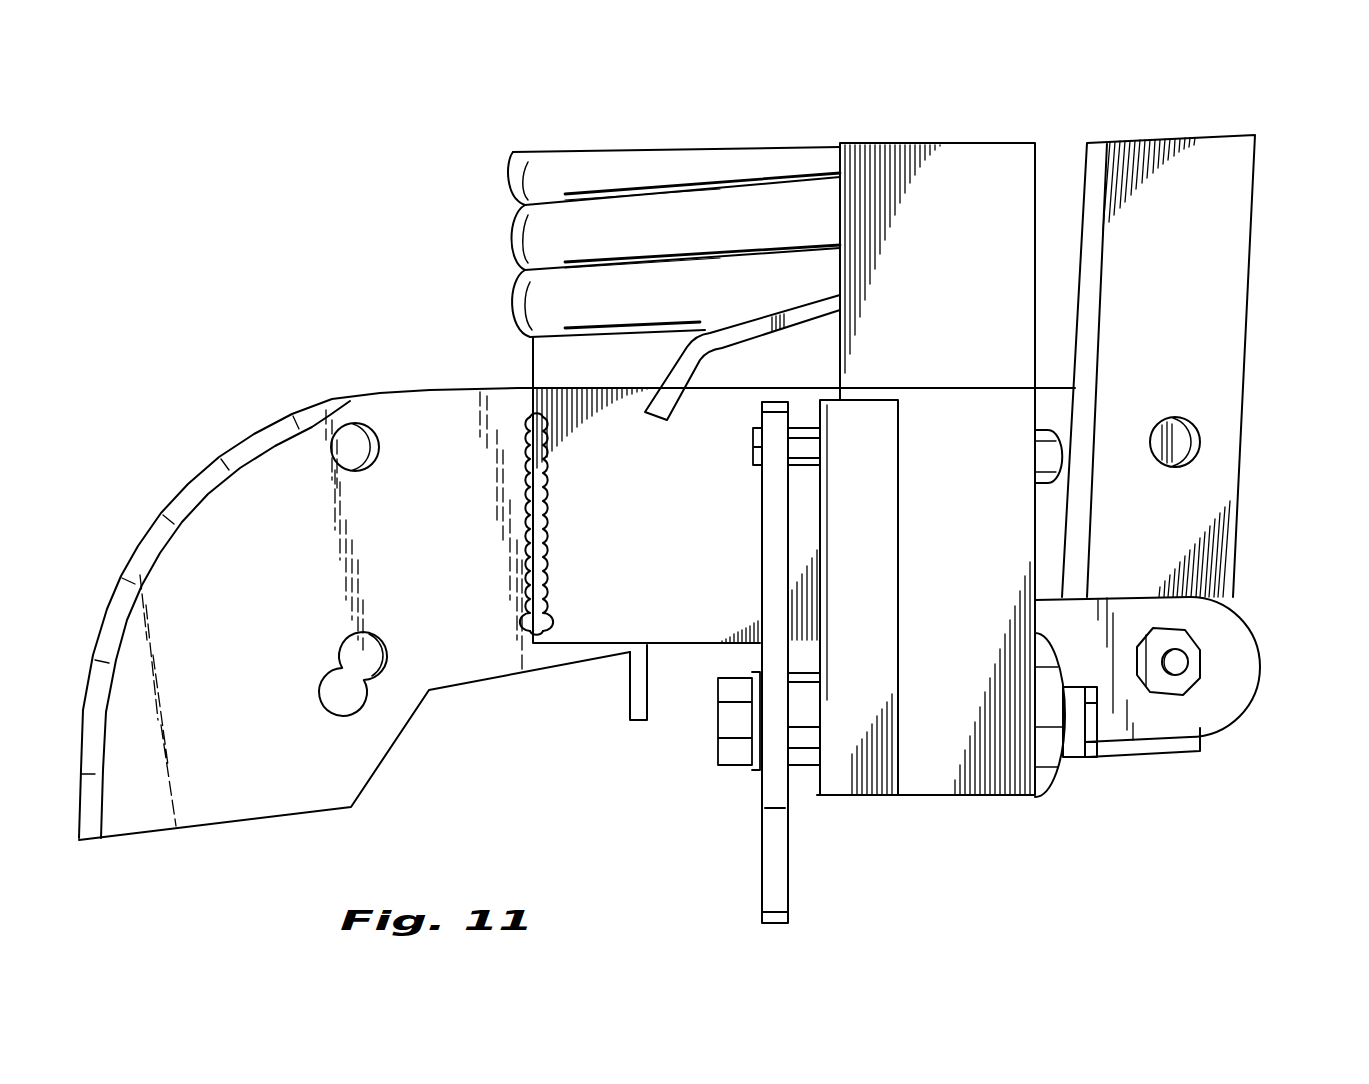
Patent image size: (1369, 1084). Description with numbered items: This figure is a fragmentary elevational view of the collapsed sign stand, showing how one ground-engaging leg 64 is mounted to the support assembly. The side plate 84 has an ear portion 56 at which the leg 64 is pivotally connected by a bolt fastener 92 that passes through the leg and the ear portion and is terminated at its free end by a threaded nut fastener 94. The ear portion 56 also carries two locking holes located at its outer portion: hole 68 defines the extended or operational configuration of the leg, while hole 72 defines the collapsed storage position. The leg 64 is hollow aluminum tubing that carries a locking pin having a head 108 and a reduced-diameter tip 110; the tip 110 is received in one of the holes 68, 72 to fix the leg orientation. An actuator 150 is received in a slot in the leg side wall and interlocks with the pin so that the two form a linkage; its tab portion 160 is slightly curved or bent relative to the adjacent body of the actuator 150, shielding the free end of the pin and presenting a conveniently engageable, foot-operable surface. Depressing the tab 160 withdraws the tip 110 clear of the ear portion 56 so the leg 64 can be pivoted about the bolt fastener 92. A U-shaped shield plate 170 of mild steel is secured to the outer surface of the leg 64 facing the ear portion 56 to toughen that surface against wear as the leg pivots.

The ear portion 56 is at (243, 488).
The ground-engaging leg 64 is at (987, 155).
The hole 68 is at (332, 690).
The hole 72 is at (355, 447).
The side plate 84 is at (611, 607).
The bolt fastener 92 is at (717, 725).
The threaded nut fastener 94 is at (1180, 663).
The head 108 is at (1052, 445).
The tip 110 is at (754, 448).
The actuator 150 is at (817, 312).
The tab portion 160 is at (680, 381).
The shield plate 170 is at (878, 509).